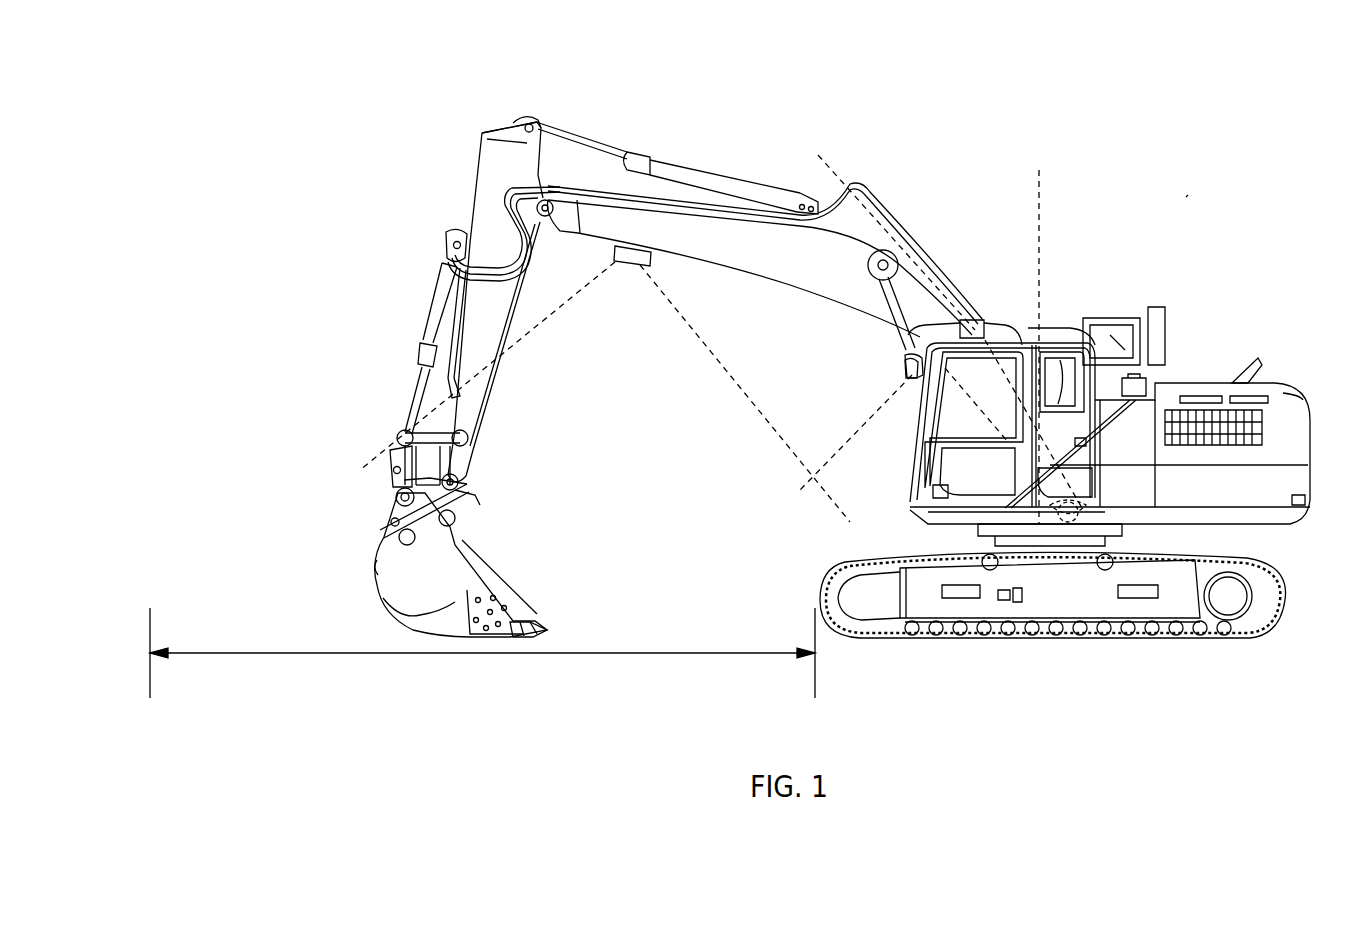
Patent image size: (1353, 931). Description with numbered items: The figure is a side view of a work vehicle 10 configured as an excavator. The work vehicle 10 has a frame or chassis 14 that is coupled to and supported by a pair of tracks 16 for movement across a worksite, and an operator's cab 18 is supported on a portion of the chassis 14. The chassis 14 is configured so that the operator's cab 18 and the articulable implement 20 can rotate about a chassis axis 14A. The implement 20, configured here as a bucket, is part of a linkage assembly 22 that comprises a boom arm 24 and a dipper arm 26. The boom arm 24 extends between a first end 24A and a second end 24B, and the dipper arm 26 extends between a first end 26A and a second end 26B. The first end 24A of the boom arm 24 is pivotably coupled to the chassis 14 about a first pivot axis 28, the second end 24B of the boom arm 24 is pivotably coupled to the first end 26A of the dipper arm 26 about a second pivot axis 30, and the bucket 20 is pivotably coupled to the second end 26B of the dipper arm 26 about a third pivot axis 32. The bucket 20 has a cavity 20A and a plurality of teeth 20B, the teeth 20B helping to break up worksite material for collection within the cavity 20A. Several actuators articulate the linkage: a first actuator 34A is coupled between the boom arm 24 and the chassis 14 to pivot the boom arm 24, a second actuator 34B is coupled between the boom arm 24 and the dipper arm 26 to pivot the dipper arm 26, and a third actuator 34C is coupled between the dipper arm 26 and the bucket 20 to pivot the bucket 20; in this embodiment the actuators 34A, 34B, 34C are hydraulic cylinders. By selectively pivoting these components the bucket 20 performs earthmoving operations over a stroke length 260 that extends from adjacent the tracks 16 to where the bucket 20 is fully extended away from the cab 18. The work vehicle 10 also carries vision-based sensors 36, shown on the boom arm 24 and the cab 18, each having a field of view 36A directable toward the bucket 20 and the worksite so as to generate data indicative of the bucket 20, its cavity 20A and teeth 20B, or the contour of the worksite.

The work vehicle 10 is at (1188, 196).
The chassis 14 is at (1258, 512).
The chassis axis 14A is at (1040, 245).
The tracks 16 is at (842, 560).
The operator's cab 18 is at (1062, 335).
The implement 20 is at (478, 563).
The cavity 20A is at (510, 593).
The teeth 20B is at (545, 628).
The linkage assembly 22 is at (395, 126).
The boom arm 24 is at (783, 286).
The first end of the boom arm 24A is at (1078, 523).
The second end of the boom arm 24B is at (533, 190).
The dipper arm 26 is at (484, 232).
The first end of the dipper arm 26A is at (495, 131).
The second end of the dipper arm 26B is at (463, 488).
The first pivot axis 28 is at (1080, 494).
The second pivot axis 30 is at (543, 217).
The third pivot axis 32 is at (463, 475).
The first actuator 34A is at (902, 323).
The second actuator 34B is at (670, 163).
The third actuator 34C is at (438, 334).
The vision-based sensor 36 is at (651, 263).
The field of view 36A is at (706, 348).
The stroke length 260 is at (655, 653).